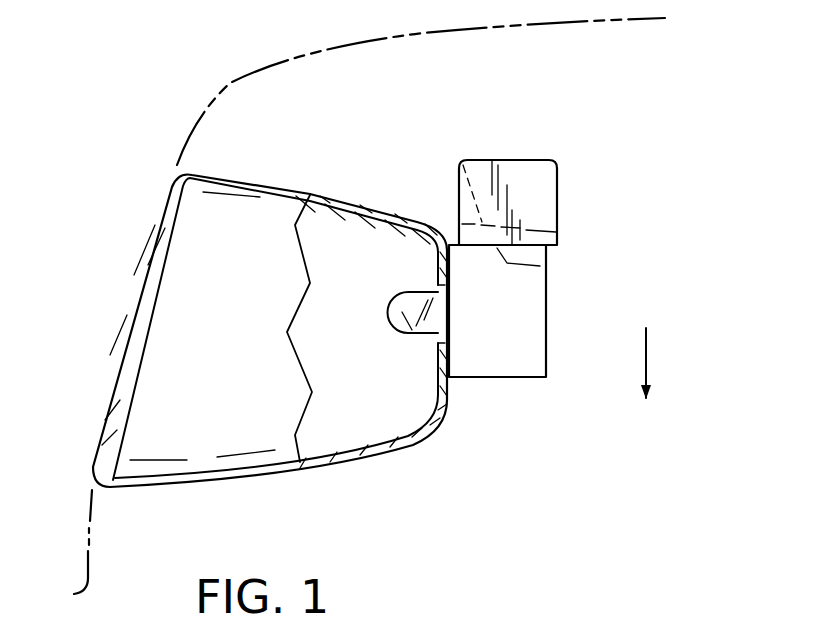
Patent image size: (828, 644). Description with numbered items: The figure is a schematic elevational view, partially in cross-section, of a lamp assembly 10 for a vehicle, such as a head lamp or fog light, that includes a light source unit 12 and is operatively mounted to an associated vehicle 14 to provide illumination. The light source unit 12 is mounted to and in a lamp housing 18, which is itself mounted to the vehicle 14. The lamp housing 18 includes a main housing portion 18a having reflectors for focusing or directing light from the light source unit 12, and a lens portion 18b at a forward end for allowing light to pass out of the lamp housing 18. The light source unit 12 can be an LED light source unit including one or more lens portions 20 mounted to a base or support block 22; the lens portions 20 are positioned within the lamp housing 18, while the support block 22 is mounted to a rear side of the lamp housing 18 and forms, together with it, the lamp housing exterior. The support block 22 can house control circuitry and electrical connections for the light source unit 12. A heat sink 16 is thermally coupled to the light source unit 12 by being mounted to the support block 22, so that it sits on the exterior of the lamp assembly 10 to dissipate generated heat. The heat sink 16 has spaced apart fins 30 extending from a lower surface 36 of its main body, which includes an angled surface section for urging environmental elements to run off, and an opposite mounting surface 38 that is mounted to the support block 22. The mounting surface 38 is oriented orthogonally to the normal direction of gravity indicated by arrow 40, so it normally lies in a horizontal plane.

The lamp assembly 10 is at (337, 320).
The light source unit 12 is at (537, 346).
The vehicle 14 is at (230, 83).
The heat sink 16 is at (538, 173).
The lamp housing 18 is at (334, 193).
The main housing portion 18a is at (350, 456).
The lens portion 18b is at (137, 275).
The lens portions 20 is at (427, 323).
The support block 22 is at (533, 322).
The fins 30 is at (521, 173).
The lower surface 36 is at (463, 157).
The mounting surface 38 is at (540, 266).
The arrow 40 is at (646, 366).